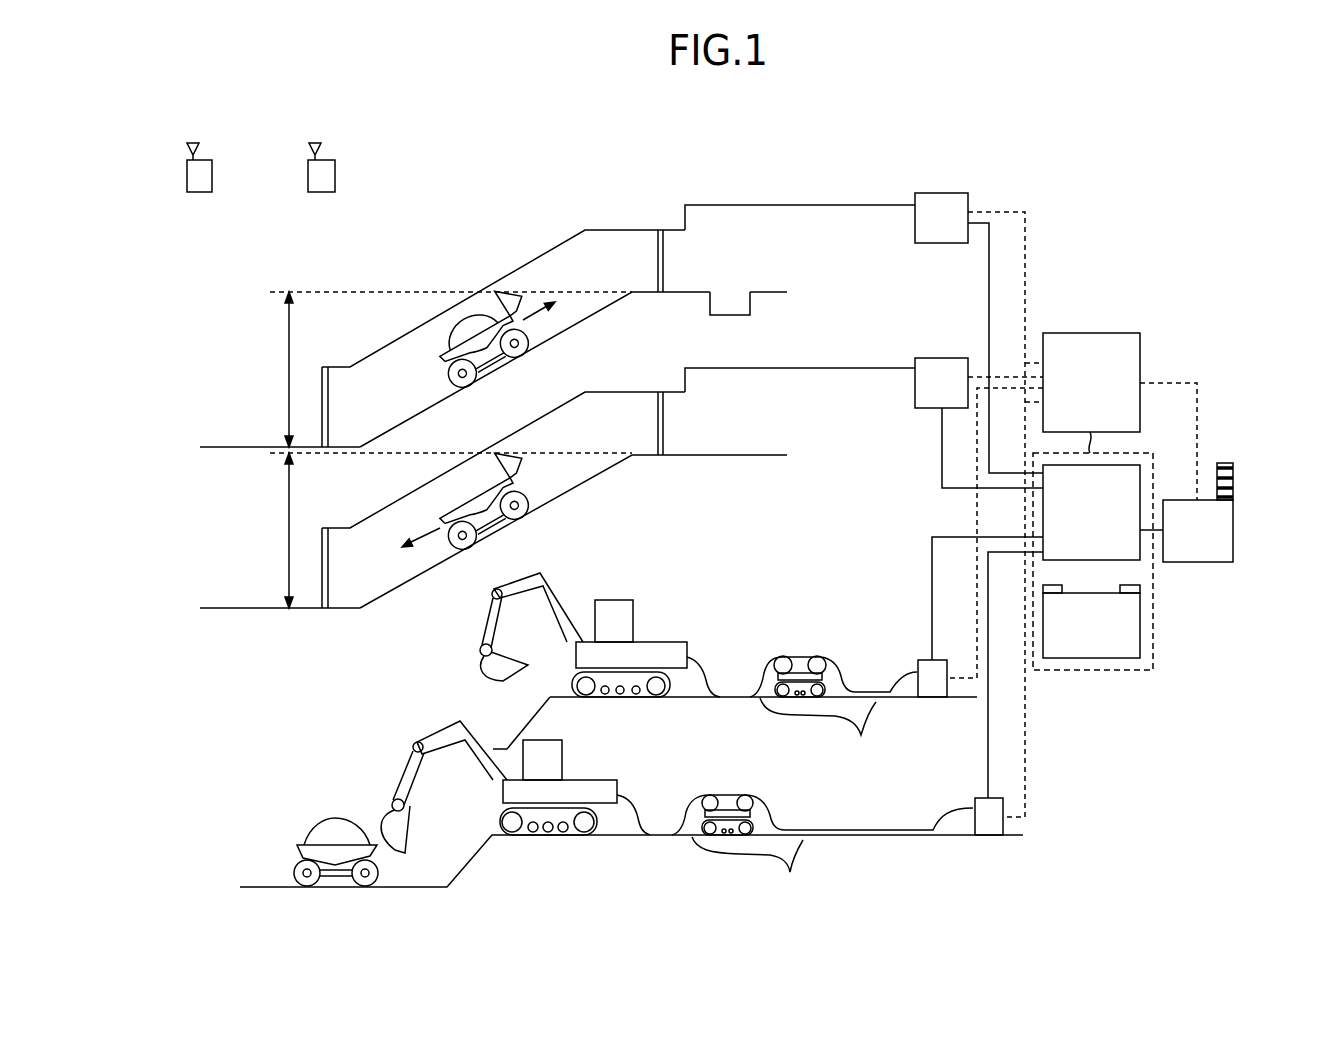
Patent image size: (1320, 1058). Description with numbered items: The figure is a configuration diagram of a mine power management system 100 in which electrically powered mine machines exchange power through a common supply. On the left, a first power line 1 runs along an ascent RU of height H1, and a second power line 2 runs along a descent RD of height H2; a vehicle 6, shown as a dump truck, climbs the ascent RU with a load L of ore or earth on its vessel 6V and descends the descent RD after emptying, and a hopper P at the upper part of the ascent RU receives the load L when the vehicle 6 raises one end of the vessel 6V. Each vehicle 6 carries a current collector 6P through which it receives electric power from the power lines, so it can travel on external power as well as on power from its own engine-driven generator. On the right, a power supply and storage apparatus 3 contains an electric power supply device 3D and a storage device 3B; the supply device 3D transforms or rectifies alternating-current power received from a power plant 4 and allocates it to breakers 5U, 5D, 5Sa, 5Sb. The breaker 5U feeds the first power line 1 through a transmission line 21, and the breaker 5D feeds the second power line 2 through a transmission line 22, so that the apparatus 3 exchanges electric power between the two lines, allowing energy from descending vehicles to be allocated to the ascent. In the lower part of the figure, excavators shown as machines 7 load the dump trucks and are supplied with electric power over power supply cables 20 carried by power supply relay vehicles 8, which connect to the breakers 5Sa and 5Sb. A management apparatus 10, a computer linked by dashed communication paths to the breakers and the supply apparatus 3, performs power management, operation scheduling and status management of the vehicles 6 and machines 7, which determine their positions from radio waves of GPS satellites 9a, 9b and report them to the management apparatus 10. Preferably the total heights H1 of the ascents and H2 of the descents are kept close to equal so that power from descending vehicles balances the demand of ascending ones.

The mine power management system 100 is at (1168, 172).
The first power line 1 is at (563, 243).
The second power line 2 is at (385, 509).
The ascent RU is at (577, 327).
The descent RD is at (577, 488).
The hopper P is at (736, 314).
The transmission line 21 is at (826, 205).
The transmission line 22 is at (826, 368).
The breaker 5U is at (938, 193).
The breaker 5D is at (938, 358).
The breaker 5Sa is at (917, 660).
The breaker 5Sb is at (975, 798).
The management apparatus 10 is at (1105, 333).
The power supply and storage apparatus 3 is at (1108, 672).
The electric power supply device 3D is at (1140, 470).
The storage device 3B is at (1140, 636).
The power plant 4 is at (1198, 562).
The vehicle 6 is at (431, 371).
The vessel 6V is at (445, 348).
The current collector 6P is at (496, 291).
The load L is at (465, 320).
The machine 7 is at (662, 650).
The power supply relay vehicle 8 is at (833, 622).
The power supply cable 20 is at (798, 800).
The GPS satellite 9a is at (200, 192).
The GPS satellite 9b is at (322, 192).
The height of ascent H1 is at (275, 369).
The height of descent H2 is at (275, 530).